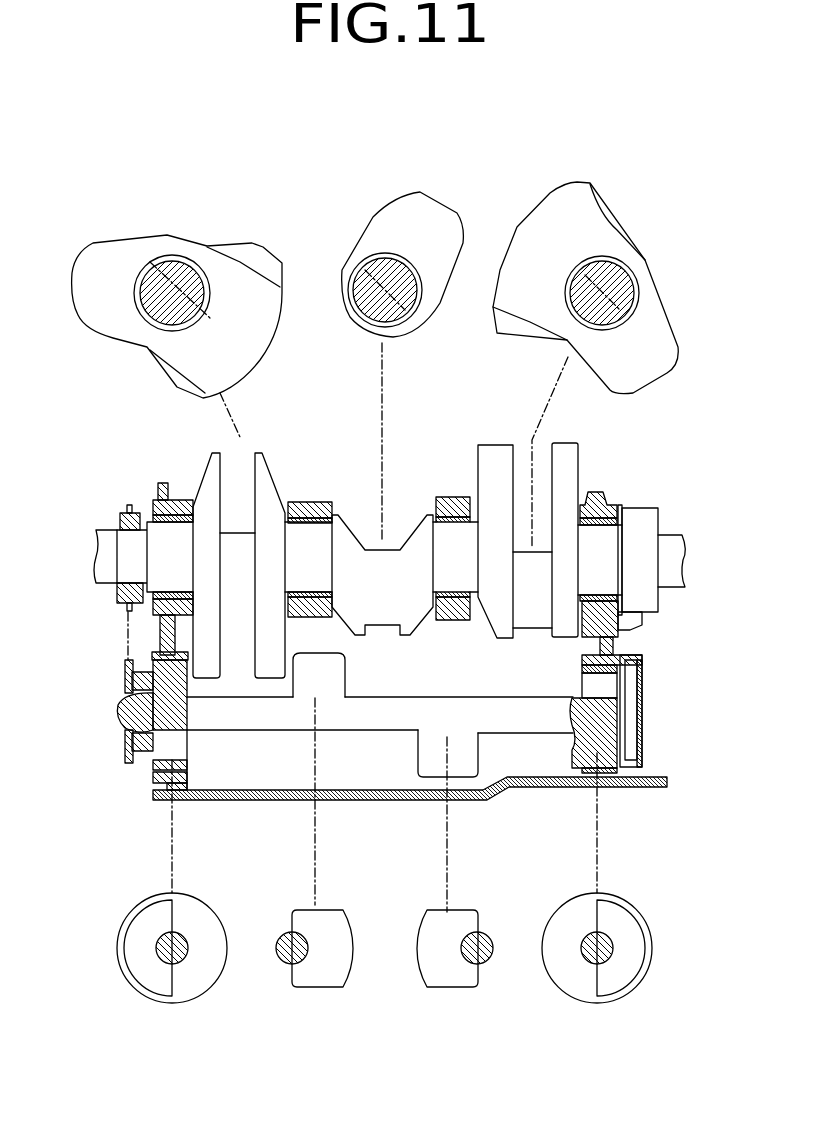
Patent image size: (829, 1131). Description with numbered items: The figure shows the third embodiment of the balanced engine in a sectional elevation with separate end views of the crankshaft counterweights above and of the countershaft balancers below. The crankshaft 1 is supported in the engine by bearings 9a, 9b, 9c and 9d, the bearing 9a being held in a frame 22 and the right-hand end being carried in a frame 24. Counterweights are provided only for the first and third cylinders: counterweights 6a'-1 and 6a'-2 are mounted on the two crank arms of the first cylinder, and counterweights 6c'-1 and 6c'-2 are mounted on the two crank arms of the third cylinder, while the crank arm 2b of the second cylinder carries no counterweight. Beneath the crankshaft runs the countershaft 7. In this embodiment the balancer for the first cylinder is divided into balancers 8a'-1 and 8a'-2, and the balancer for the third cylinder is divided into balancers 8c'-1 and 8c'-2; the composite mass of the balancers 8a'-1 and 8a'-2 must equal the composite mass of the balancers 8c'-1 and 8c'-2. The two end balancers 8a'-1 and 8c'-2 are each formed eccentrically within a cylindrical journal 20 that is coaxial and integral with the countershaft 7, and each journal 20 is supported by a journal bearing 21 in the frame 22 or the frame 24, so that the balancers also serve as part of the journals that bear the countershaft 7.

The crankshaft 1 is at (175, 280).
The crank arm 2b is at (452, 275).
The counterweight 6a'-1 is at (182, 465).
The counterweight 6a'-2 is at (267, 514).
The counterweight 6c'-1 is at (498, 472).
The counterweight 6c'-2 is at (585, 405).
The countershaft 7 is at (453, 712).
The balancer 8a'-1 is at (138, 849).
The balancer 8a'-2 is at (352, 846).
The balancer 8c'-1 is at (409, 884).
The balancer 8c'-2 is at (574, 847).
The bearing 9a is at (158, 508).
The bearing 9b is at (307, 513).
The bearing 9c is at (450, 492).
The bearing 9d is at (607, 508).
The journal 20 is at (187, 763).
The journal bearing 21 is at (153, 772).
The frame 22 is at (158, 627).
The frame 24 is at (600, 633).